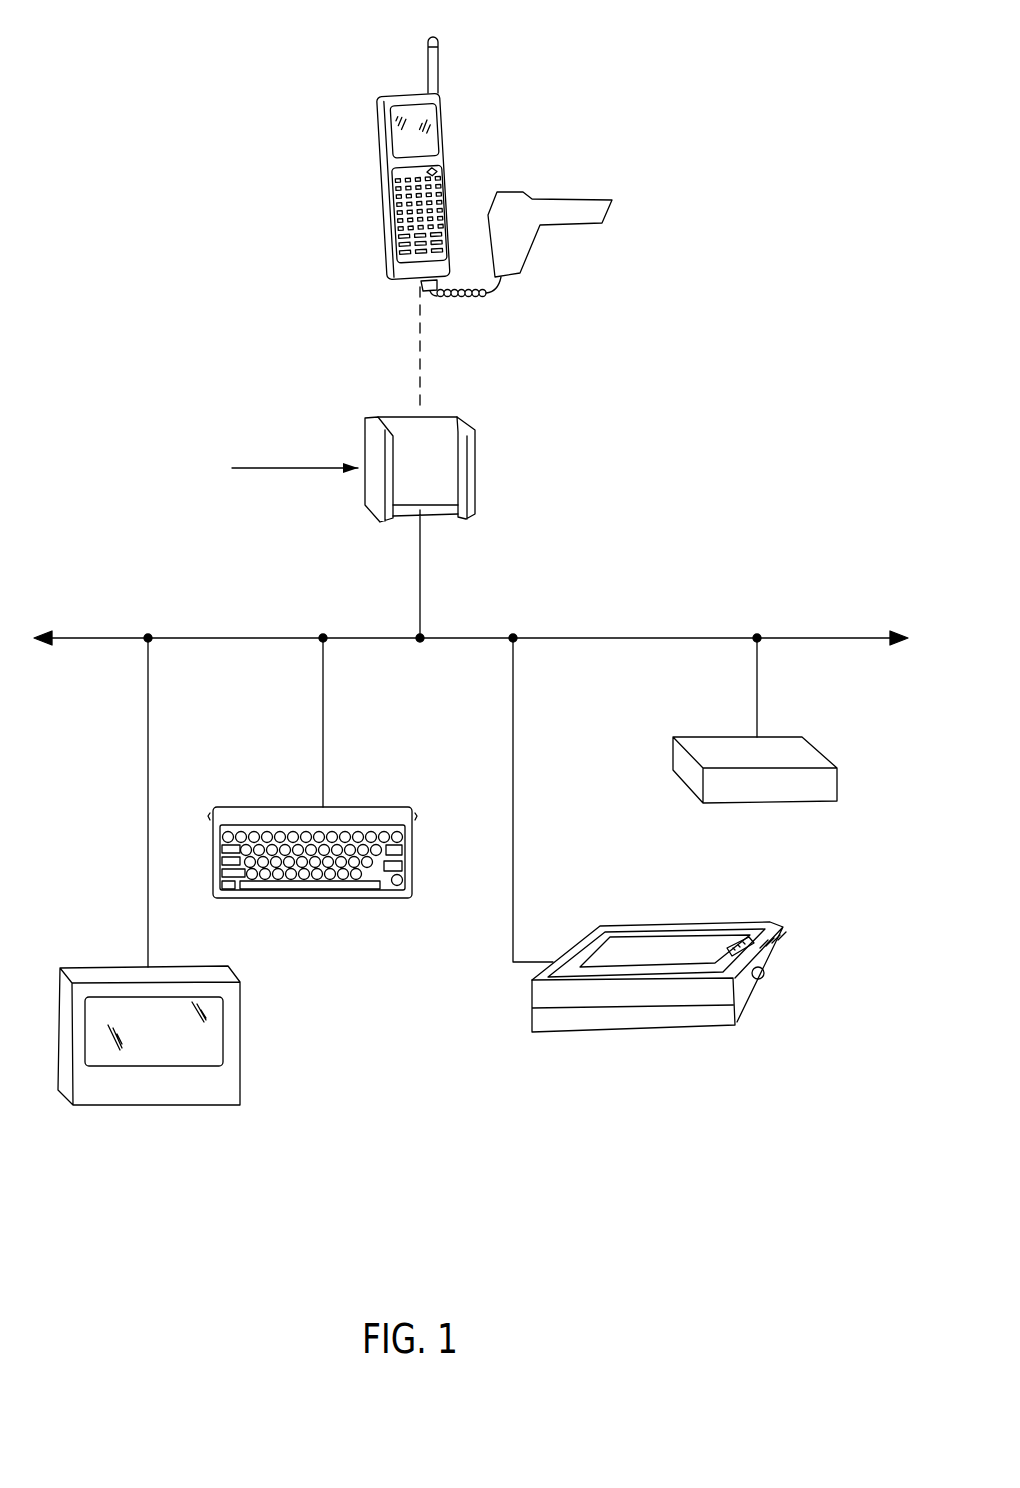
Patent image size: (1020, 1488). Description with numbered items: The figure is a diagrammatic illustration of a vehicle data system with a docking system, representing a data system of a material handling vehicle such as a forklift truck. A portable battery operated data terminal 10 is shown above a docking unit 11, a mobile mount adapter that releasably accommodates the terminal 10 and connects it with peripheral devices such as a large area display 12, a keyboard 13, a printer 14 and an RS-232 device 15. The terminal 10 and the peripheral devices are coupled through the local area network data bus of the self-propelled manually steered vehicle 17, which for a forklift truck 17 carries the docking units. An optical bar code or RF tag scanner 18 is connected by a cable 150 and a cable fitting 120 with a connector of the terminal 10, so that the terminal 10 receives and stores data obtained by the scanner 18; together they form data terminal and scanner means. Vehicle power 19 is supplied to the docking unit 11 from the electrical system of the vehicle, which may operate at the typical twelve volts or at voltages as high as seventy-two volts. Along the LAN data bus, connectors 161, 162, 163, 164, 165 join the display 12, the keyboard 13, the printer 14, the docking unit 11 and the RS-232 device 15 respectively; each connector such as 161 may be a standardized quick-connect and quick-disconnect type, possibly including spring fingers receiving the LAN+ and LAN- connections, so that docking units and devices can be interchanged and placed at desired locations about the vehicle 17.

The portable battery operated data terminal 10 is at (404, 77).
The docking unit 11 is at (373, 448).
The peripheral device 12 is at (252, 1040).
The peripheral device 13 is at (364, 796).
The peripheral device 14 is at (790, 947).
The peripheral device 15 is at (819, 742).
The self-propelled manually steered vehicle 17 is at (678, 518).
The optical bar code or RF tag scanner 18 is at (567, 192).
The vehicle power 19 is at (270, 468).
The cable fitting 120 is at (418, 283).
The cable 150 is at (482, 297).
The connector 161 is at (144, 645).
The connector 162 is at (320, 645).
The connector 163 is at (507, 645).
The connector 164 is at (417, 643).
The connector 165 is at (757, 637).